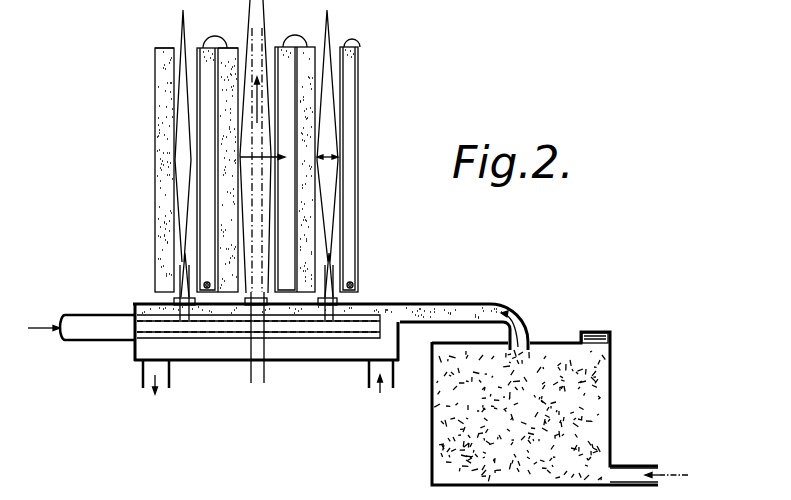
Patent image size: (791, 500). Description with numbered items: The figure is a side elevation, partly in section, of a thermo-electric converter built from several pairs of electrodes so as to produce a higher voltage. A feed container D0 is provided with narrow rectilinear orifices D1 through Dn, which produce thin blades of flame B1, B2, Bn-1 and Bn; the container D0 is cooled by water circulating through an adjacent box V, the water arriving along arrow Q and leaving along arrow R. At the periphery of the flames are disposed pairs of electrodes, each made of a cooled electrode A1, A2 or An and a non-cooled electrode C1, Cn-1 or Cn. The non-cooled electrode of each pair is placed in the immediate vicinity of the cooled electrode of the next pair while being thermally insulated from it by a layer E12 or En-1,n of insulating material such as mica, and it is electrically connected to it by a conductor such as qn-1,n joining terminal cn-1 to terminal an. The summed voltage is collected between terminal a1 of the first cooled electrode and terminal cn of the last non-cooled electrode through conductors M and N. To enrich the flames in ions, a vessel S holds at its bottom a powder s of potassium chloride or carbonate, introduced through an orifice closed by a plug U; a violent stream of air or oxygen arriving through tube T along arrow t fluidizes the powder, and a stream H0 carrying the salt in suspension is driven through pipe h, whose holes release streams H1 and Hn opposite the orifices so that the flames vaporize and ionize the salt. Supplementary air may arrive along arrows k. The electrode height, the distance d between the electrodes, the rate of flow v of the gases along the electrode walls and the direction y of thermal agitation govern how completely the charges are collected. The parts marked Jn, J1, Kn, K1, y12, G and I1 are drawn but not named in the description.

The conductor N is at (156, 47).
The conductor M is at (347, 44).
The terminal of non-cooled electrode Cn cn is at (168, 47).
The terminal of non-cooled electrode Cn-1 cn-1 is at (228, 47).
The terminal of cooled electrode An an is at (215, 36).
The terminal of cooled electrode A1 a1 is at (359, 47).
The anode filling Jn is at (203, 47).
The anode filling J1 is at (319, 44).
The conductor qn-1,n is at (215, 62).
The cooled electrode An is at (208, 72).
The cooled electrode A2 is at (287, 167).
The cooled electrode A1 is at (350, 72).
The thin flame Bn is at (183, 134).
The thin flame Bn-1 is at (247, 96).
The thin flame B2 is at (270, 192).
The thin flame B1 is at (328, 212).
The non-cooled electrode Cn is at (163, 124).
The non-cooled electrode Cn-1 is at (228, 187).
The non-cooled electrode C1 is at (315, 98).
The thermal insulator layer En-1,n is at (240, 157).
The thermal insulator layer E12 is at (296, 127).
The bottom pin Kn is at (206, 283).
The bottom pin K1 is at (352, 283).
The supplementary air arrows k is at (157, 298).
The rate of flow v is at (263, 100).
The direction y is at (262, 149).
The outlet y12 is at (297, 20).
The distance between electrodes d is at (327, 149).
The feed pipe G is at (204, 326).
The pipe h is at (180, 303).
The orifice Dn is at (187, 303).
The orifice D1 is at (327, 305).
The feed container D0 is at (243, 335).
The stream of oxidizer Hn is at (193, 303).
The stream of oxidizer H1 is at (333, 305).
The stream of air or oxygen H0 is at (523, 323).
The opening I1 is at (322, 305).
The box V is at (267, 360).
The arrow R is at (156, 387).
The arrow Q is at (378, 387).
The vessel S is at (611, 372).
The powder s is at (574, 403).
The plug U is at (597, 333).
The tube T is at (630, 464).
The arrow t is at (666, 467).